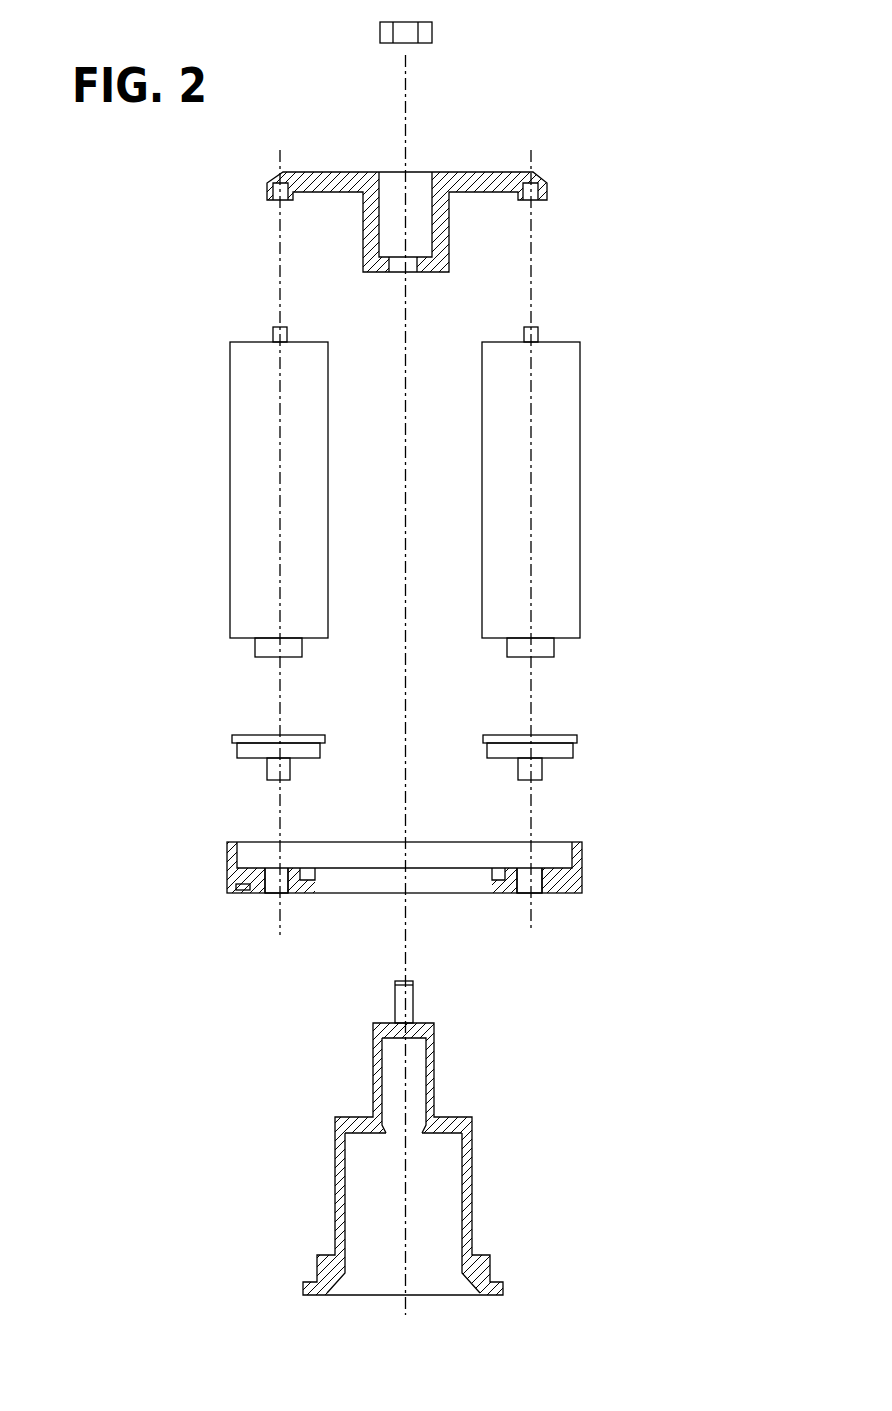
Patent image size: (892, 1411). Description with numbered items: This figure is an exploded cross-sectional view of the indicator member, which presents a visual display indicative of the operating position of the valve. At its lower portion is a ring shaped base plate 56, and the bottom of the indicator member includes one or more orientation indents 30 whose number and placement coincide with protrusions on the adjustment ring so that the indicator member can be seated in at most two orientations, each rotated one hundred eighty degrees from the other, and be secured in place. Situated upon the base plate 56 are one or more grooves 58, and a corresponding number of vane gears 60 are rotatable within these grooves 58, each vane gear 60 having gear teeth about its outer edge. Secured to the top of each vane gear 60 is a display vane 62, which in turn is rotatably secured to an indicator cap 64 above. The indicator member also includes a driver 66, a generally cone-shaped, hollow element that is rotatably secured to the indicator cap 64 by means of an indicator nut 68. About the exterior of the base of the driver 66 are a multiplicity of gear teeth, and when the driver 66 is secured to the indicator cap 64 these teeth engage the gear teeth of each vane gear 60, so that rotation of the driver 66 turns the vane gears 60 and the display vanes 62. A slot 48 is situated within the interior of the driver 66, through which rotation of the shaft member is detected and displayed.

The orientation indents 30 is at (242, 890).
The slot 48 is at (412, 1102).
The base plate 56 is at (434, 898).
The grooves 58 is at (273, 893).
The vane gears 60 is at (237, 750).
The display vane 62 is at (242, 540).
The indicator cap 64 is at (547, 185).
The driver 66 is at (437, 1138).
The indicator nut 68 is at (432, 30).